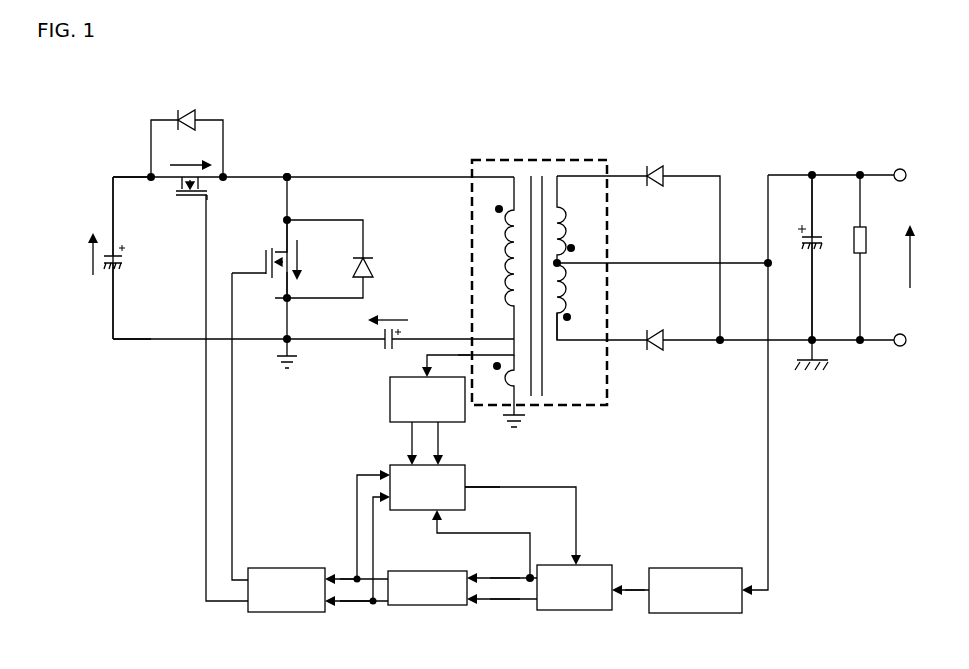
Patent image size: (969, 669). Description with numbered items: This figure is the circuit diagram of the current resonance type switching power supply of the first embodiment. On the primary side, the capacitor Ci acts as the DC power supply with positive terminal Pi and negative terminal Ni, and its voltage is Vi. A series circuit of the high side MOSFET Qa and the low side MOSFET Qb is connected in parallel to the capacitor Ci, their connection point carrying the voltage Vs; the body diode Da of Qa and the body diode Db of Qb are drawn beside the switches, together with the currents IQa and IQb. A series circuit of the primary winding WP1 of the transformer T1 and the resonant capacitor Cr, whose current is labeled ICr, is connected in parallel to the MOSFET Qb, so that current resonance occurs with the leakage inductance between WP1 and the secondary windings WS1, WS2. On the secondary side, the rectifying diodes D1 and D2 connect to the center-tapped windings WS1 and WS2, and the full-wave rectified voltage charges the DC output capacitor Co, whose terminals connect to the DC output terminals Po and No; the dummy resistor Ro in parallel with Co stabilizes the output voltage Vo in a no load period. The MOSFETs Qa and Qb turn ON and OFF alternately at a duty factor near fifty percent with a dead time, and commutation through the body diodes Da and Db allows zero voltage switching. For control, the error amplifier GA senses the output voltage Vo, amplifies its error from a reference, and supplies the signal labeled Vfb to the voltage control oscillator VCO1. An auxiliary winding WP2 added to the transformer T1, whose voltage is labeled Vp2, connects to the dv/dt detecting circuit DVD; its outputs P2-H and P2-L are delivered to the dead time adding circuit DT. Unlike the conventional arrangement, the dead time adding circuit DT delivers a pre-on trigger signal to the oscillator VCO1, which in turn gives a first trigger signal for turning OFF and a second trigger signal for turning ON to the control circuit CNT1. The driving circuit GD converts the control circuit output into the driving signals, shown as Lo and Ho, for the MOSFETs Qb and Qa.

The positive terminal Pi is at (121, 179).
The negative terminal Ni is at (121, 341).
The voltage at the connection point Vs is at (286, 165).
The DC output terminal Po is at (911, 176).
The DC output terminal No is at (912, 341).
The body diode Da is at (187, 128).
The current IQa is at (191, 155).
The high side MOSFET Qa is at (186, 194).
The capacitor Ci is at (126, 258).
The voltage of the capacitor Ci Vi is at (84, 254).
The low side MOSFET Qb is at (256, 259).
The current IQb is at (314, 260).
The body diode Db is at (380, 266).
The resonant capacitor current ICr is at (388, 309).
The resonant capacitor Cr is at (386, 349).
The voltage of auxiliary winding WP2 Vp2 is at (458, 355).
The transformer T1 is at (539, 272).
The primary winding WP1 is at (497, 242).
The auxiliary winding WP2 is at (494, 375).
The secondary winding WS1 is at (577, 221).
The secondary winding WS2 is at (579, 301).
The rectifying diode D1 is at (657, 191).
The rectifying diode D2 is at (657, 329).
The DC output capacitor Co is at (819, 257).
The dummy resistor Ro is at (872, 244).
The DC output voltage Vo is at (921, 256).
The dv/dt detecting circuit DVD is at (390, 398).
The output of the dv/dt detecting circuit P2-H is at (403, 443).
The output of the dv/dt detecting circuit P2-L is at (449, 443).
The dead time adding circuit DT is at (468, 467).
The driving circuit GD is at (299, 567).
The low-side drive output Lo is at (345, 570).
The high-side drive output Ho is at (355, 611).
The control circuit CNT1 is at (409, 606).
The voltage control oscillator VCO1 is at (574, 587).
The feedback voltage Vfb is at (632, 579).
The error amplifier GA is at (688, 567).